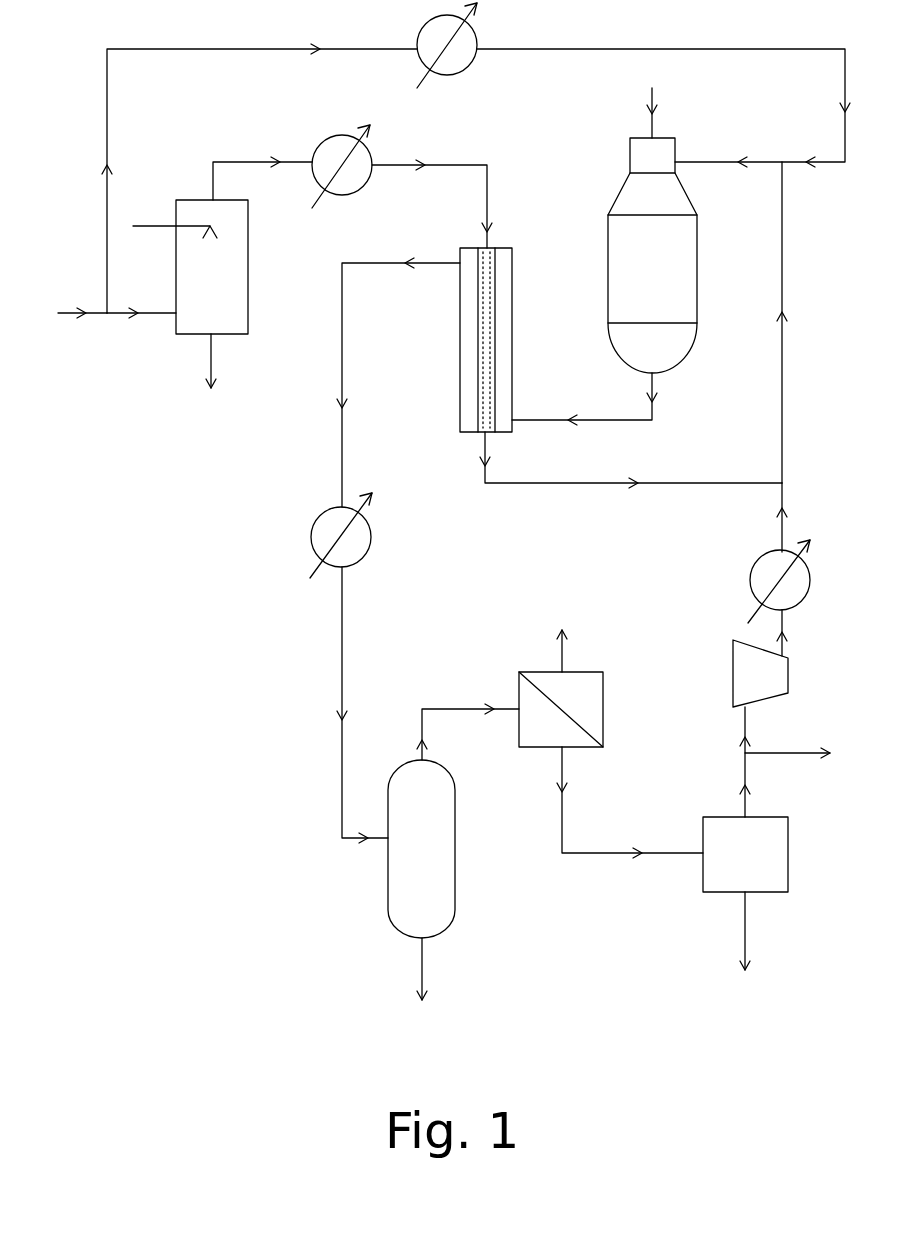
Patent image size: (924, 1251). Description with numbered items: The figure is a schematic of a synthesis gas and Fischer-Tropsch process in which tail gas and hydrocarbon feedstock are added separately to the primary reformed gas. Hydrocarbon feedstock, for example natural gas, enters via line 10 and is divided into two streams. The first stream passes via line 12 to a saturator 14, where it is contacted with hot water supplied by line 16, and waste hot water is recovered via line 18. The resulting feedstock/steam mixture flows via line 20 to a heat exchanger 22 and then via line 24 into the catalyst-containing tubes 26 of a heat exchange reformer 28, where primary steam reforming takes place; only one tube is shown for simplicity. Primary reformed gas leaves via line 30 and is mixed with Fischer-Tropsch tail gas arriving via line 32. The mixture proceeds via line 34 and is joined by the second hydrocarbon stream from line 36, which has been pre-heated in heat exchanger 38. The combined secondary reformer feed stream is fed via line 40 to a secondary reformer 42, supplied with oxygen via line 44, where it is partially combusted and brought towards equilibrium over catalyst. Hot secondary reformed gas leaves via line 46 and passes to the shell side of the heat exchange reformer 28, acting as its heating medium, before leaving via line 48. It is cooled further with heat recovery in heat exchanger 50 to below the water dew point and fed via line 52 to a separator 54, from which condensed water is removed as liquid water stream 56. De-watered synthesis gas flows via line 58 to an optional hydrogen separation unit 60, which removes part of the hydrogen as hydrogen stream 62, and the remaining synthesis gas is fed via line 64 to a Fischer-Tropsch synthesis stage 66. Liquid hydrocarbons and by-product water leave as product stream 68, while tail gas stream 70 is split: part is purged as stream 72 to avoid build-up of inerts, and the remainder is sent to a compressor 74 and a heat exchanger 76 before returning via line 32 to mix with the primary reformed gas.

The line 10 is at (97, 312).
The line 12 is at (143, 312).
The saturator 14 is at (250, 232).
The line 16 is at (162, 226).
The line 18 is at (212, 350).
The line 20 is at (250, 162).
The heat exchanger 22 is at (368, 155).
The line 24 is at (485, 162).
The catalyst-containing tubes 26 is at (487, 327).
The heat exchange reformer 28 is at (460, 388).
The line 30 is at (485, 472).
The line 32 is at (782, 497).
The line 34 is at (782, 265).
The line 36 is at (335, 50).
The heat exchanger 38 is at (462, 72).
The line 40 is at (705, 162).
The secondary reformer 42 is at (699, 245).
The line 44 is at (655, 122).
The line 46 is at (612, 420).
The line 48 is at (342, 287).
The heat exchanger 50 is at (354, 556).
The line 52 is at (342, 650).
The separator 54 is at (455, 853).
The liquid water stream 56 is at (423, 957).
The line 58 is at (465, 710).
The hydrogen separation unit 60 is at (587, 748).
The hydrogen stream 62 is at (558, 657).
The line 64 is at (558, 808).
The Fischer-Tropsch synthesis stage 66 is at (788, 850).
The product stream 68 is at (747, 938).
The tail gas stream 70 is at (748, 802).
The purge stream 72 is at (805, 752).
The compressor 74 is at (790, 678).
The heat exchanger 76 is at (808, 568).